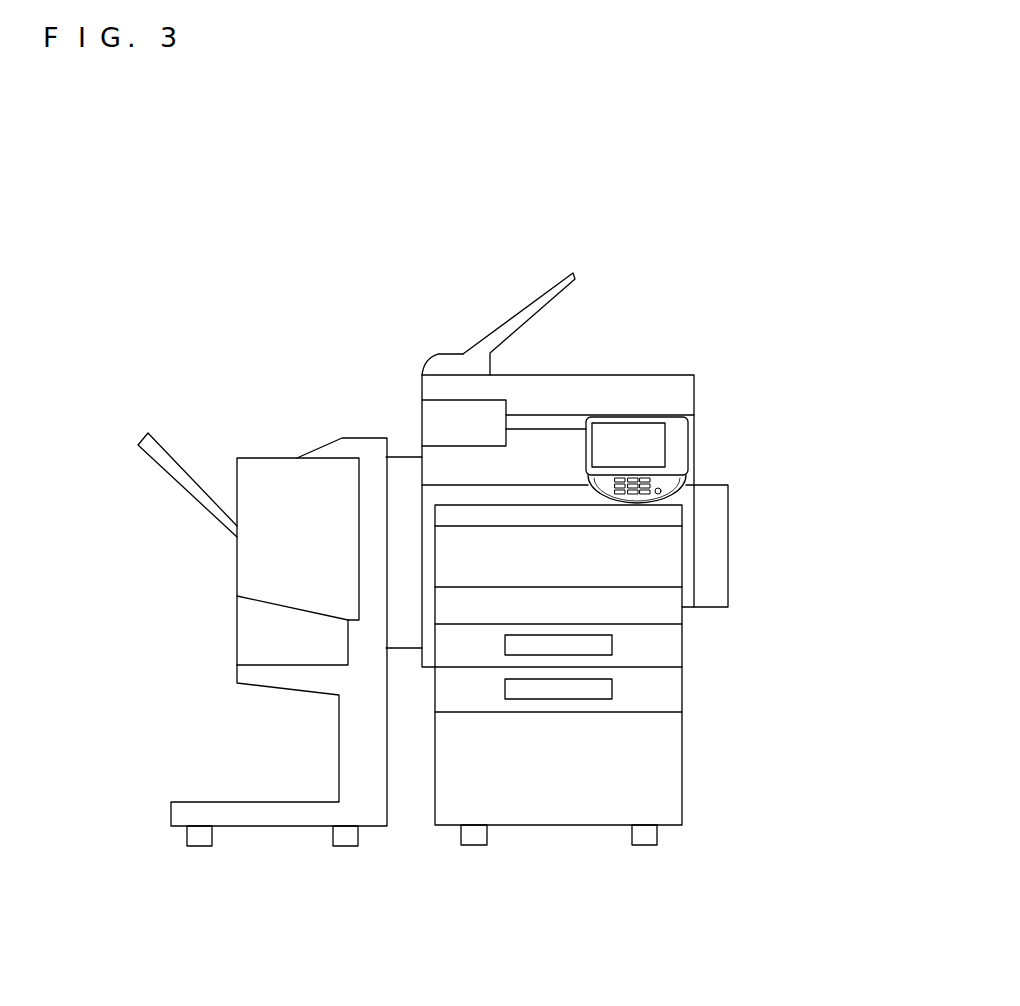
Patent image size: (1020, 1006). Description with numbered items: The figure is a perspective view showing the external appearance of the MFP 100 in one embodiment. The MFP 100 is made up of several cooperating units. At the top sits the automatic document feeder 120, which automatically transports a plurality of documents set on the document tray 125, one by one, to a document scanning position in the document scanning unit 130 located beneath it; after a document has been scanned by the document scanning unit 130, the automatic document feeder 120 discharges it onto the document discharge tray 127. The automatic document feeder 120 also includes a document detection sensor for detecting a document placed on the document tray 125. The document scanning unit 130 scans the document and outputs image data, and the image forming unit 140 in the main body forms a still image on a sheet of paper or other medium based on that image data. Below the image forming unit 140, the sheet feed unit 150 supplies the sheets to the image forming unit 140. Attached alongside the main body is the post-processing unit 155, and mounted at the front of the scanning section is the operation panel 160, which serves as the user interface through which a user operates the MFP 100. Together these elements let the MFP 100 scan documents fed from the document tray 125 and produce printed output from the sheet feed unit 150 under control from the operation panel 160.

The MFP 100 is at (227, 251).
The automatic document feeder 120 is at (420, 414).
The document tray 125 is at (552, 288).
The document discharge tray 127 is at (650, 372).
The document scanning unit 130 is at (533, 458).
The image forming unit 140 is at (642, 551).
The sheet feed unit 150 is at (722, 625).
The post-processing unit 155 is at (277, 470).
The operation panel 160 is at (670, 449).